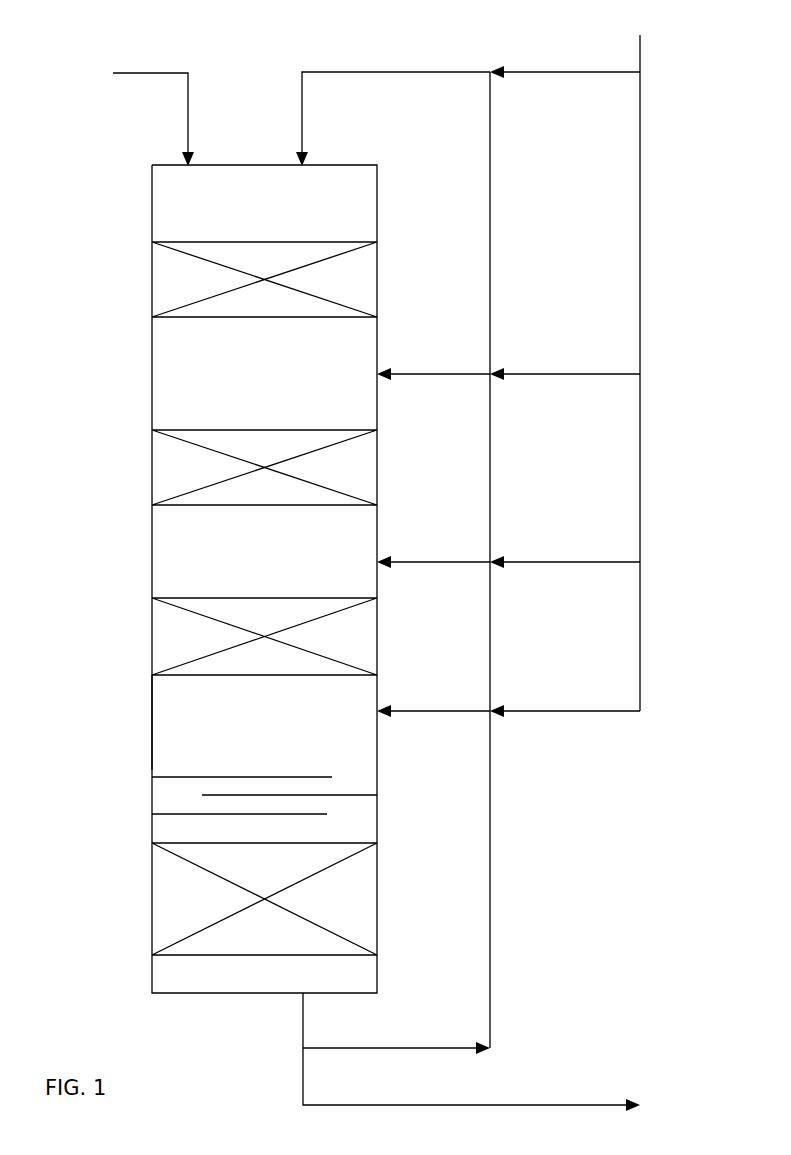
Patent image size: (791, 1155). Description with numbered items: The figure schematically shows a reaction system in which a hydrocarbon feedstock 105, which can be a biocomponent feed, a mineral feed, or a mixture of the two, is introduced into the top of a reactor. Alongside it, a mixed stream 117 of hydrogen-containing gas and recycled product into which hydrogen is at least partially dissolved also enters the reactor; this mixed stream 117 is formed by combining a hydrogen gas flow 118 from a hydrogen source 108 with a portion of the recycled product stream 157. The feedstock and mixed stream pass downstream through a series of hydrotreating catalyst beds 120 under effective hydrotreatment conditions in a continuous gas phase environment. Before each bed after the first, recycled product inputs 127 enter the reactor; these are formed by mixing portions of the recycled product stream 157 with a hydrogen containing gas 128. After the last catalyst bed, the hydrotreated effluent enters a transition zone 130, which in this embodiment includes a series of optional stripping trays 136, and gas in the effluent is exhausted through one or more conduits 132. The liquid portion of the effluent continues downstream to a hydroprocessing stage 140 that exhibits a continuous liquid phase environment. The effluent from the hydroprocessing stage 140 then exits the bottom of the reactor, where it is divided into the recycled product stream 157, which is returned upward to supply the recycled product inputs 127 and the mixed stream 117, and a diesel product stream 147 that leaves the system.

The hydrocarbon feedstock 105 is at (130, 93).
The mixed stream 117 is at (377, 55).
The hydrogen gas flow 118 is at (522, 65).
The hydrogen source 108 is at (658, 83).
The hydrotreating catalyst beds 120 is at (133, 607).
The recycled product inputs 127 is at (402, 365).
The hydrogen containing gas 128 is at (525, 355).
The conduits 132 is at (150, 748).
The transition zone 130 is at (145, 767).
The stripping trays 136 is at (385, 785).
The hydroprocessing stage 140 is at (133, 870).
The recycled product stream 157 is at (505, 1002).
The diesel product stream 147 is at (580, 1087).